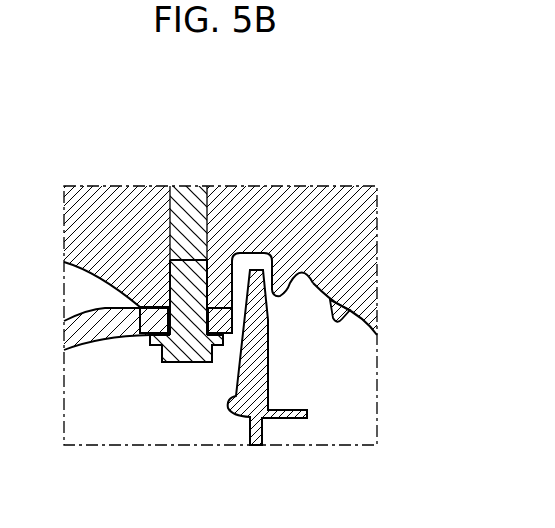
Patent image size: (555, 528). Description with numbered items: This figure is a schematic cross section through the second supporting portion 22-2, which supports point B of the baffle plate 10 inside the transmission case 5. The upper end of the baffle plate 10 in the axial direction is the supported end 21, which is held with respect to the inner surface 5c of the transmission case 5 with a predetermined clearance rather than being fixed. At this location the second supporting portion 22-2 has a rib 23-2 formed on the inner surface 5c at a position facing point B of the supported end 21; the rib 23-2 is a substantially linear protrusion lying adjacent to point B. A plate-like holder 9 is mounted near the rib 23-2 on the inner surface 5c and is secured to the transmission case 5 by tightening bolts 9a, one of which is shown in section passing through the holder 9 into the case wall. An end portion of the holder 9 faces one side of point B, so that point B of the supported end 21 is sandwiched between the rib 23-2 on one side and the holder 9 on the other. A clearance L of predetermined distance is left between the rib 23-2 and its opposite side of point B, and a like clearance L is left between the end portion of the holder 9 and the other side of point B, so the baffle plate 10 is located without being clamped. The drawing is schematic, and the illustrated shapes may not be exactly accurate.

The transmission case 5 is at (90, 274).
The inner surface 5c is at (378, 281).
The plate-like holder 9 is at (233, 252).
The bolt 9a is at (185, 363).
The baffle plate 10 is at (280, 388).
The supported end 21 is at (263, 268).
The second supporting portion 22-2 is at (373, 108).
The rib 23-2 is at (316, 280).
The clearance L is at (233, 344).